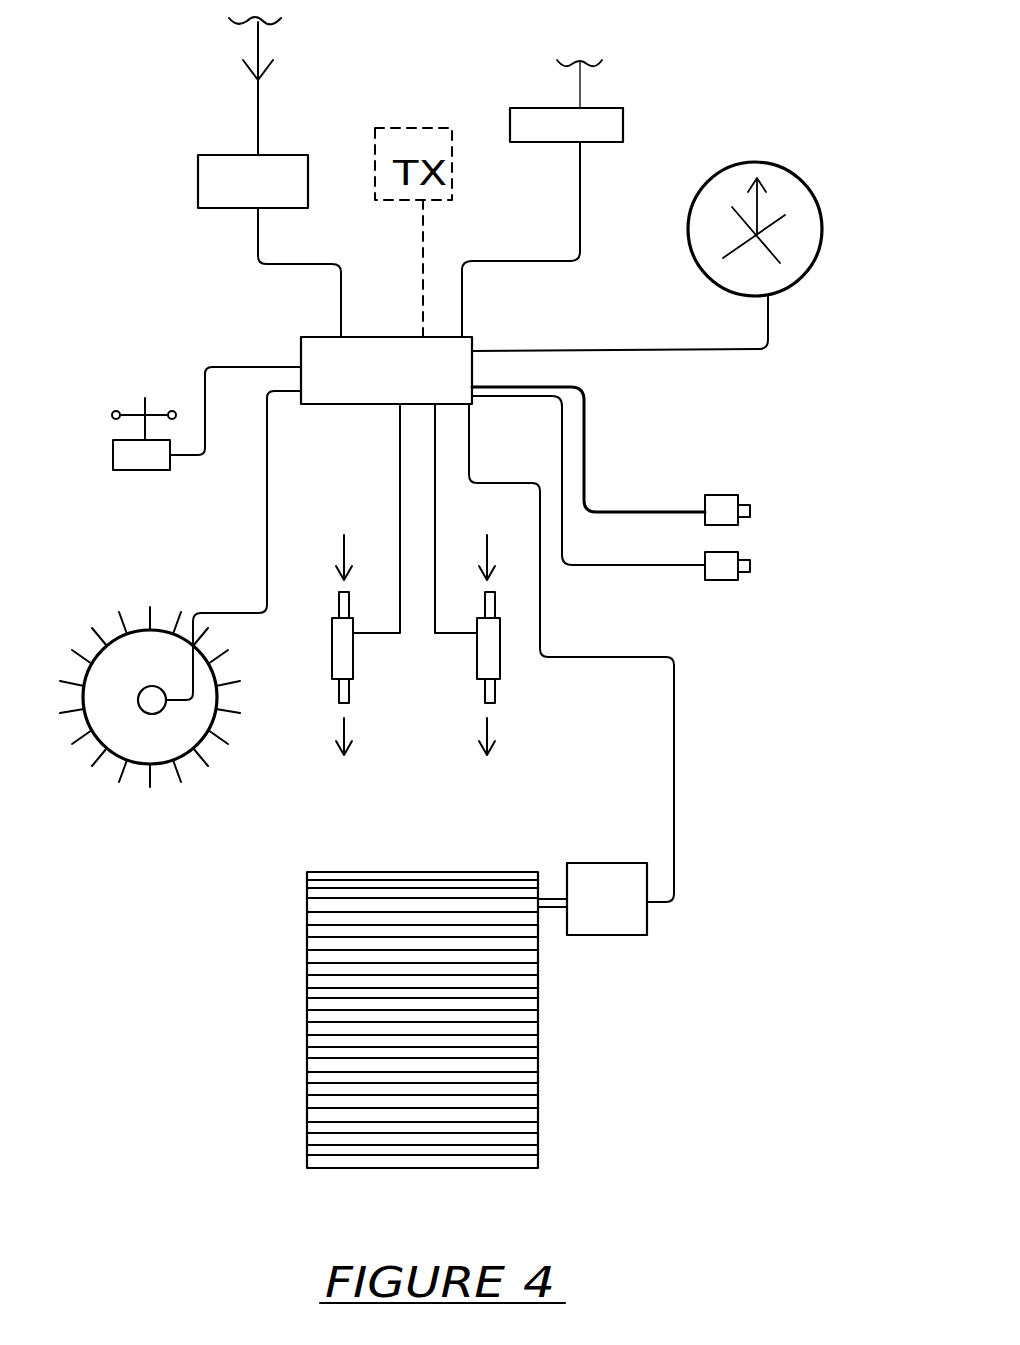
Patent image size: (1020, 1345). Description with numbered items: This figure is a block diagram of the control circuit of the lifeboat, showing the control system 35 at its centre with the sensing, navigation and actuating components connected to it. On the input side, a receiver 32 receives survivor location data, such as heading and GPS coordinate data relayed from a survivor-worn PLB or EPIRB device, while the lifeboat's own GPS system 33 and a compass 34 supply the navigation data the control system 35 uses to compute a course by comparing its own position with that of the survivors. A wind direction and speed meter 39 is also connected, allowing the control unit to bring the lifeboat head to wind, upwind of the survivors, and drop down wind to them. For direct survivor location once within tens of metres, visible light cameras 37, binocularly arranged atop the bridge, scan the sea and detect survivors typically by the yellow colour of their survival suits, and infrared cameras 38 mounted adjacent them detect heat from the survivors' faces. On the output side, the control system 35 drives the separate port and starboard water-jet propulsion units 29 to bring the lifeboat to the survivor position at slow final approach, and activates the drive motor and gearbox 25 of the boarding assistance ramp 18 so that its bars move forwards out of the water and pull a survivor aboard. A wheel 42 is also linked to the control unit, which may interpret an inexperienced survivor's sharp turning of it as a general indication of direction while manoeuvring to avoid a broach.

The boarding assistance ramp 18 is at (307, 1020).
The drive motor and gearbox 25 is at (647, 917).
The port and starboard water-jet propulsion units 29 is at (416, 593).
The receiver 32 is at (198, 182).
The GPS system 33 is at (623, 118).
The compass 34 is at (822, 212).
The control system 35 is at (300, 358).
The visible light cameras 37 is at (722, 495).
The infrared cameras 38 is at (720, 580).
The wind direction and speed meter 39 is at (113, 457).
The wheel 42 is at (98, 648).